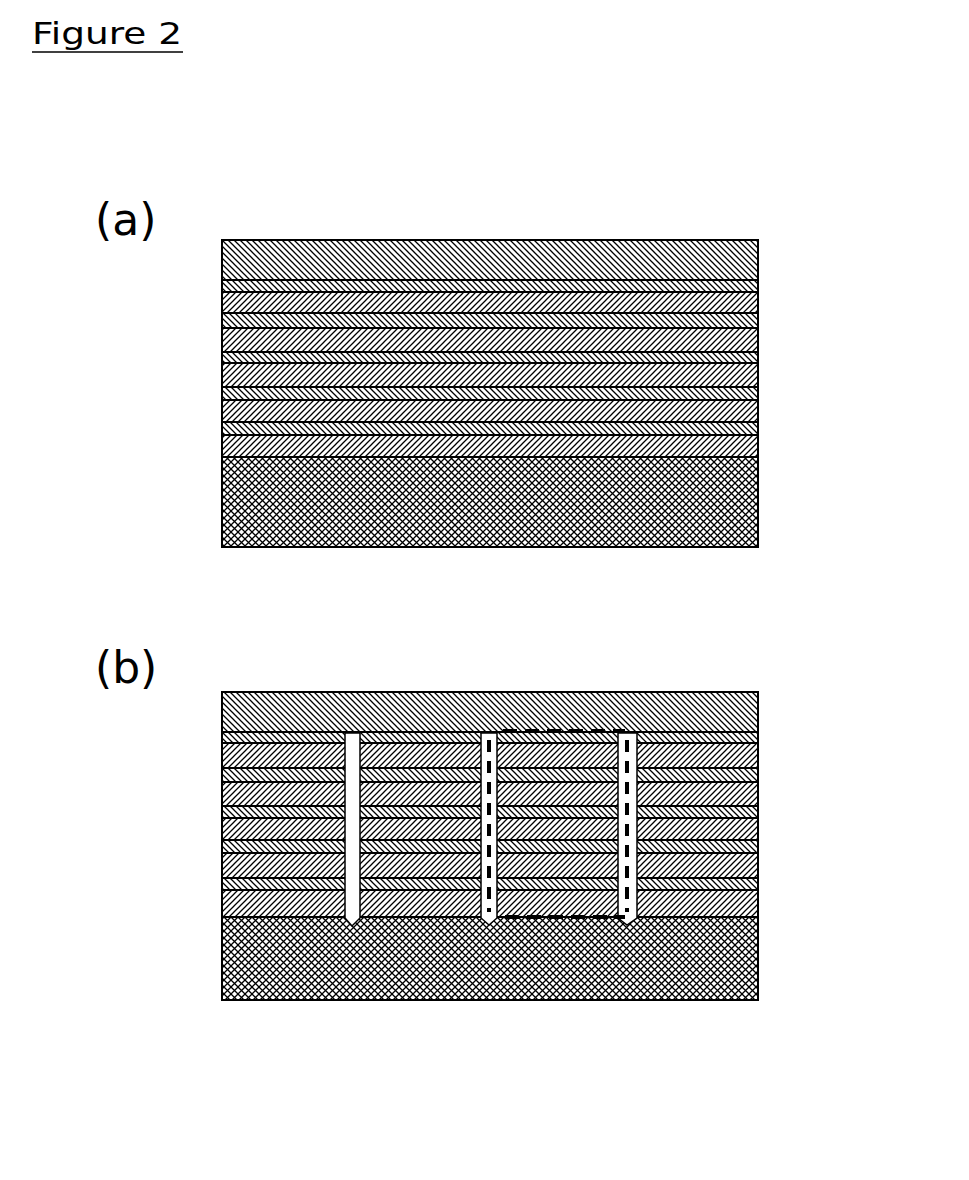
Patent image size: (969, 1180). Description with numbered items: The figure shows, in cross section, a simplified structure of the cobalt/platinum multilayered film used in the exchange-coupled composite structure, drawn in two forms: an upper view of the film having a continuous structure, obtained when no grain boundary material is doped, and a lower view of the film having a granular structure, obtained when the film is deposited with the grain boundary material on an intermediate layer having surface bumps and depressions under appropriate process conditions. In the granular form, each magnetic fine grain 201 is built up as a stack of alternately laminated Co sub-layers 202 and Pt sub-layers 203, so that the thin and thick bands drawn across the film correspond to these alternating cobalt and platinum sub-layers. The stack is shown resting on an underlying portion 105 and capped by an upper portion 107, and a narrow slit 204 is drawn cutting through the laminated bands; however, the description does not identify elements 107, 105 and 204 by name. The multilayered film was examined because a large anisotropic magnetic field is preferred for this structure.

The top layer 107 is at (747, 263).
The Co sub-layer 202 is at (745, 307).
The Pt sub-layer 203 is at (745, 358).
The substrate 105 is at (745, 512).
The trench 204 is at (352, 735).
The magnetic fine grain 201 is at (578, 732).